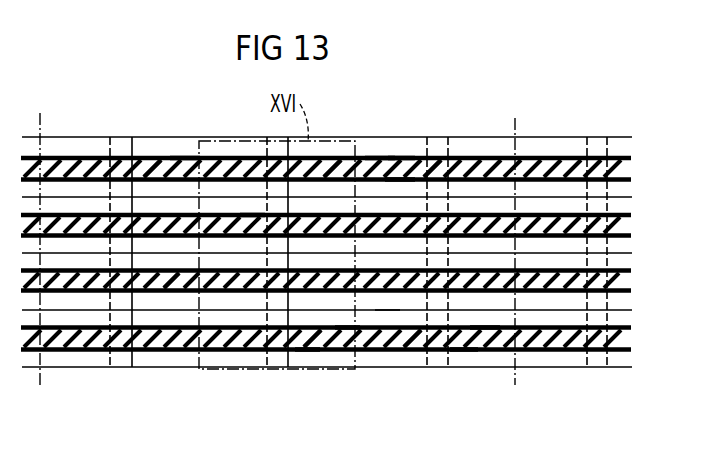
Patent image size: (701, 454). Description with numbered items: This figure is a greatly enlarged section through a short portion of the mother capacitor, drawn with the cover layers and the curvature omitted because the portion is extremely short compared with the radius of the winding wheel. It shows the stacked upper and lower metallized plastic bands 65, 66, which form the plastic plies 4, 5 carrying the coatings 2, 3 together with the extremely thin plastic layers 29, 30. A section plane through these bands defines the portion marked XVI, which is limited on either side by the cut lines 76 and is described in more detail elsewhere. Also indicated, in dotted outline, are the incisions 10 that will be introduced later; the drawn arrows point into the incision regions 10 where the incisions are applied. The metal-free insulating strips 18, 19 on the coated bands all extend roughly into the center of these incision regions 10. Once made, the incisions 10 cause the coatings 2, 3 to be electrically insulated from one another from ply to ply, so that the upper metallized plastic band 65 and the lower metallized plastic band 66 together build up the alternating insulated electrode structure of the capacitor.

The coating 2 is at (400, 157).
The coating 3 is at (400, 190).
The plastic ply 4 is at (328, 167).
The plastic ply 5 is at (250, 212).
The incision 10 is at (118, 312).
The metal-free insulating strip 18 is at (185, 158).
The metal-free insulating strip 19 is at (147, 165).
The extremely thin plastic layer 29 is at (378, 148).
The extremely thin plastic layer 30 is at (435, 160).
The upper metallized plastic band 65 is at (622, 168).
The lower metallized plastic band 66 is at (622, 228).
The cut line 76 is at (41, 127).